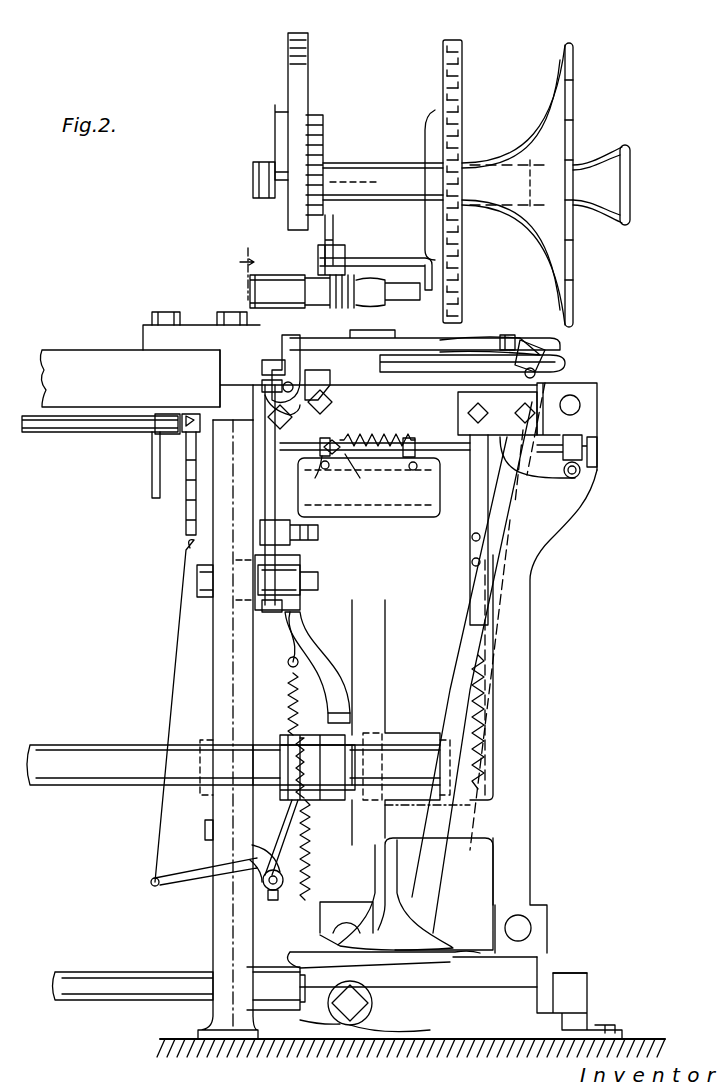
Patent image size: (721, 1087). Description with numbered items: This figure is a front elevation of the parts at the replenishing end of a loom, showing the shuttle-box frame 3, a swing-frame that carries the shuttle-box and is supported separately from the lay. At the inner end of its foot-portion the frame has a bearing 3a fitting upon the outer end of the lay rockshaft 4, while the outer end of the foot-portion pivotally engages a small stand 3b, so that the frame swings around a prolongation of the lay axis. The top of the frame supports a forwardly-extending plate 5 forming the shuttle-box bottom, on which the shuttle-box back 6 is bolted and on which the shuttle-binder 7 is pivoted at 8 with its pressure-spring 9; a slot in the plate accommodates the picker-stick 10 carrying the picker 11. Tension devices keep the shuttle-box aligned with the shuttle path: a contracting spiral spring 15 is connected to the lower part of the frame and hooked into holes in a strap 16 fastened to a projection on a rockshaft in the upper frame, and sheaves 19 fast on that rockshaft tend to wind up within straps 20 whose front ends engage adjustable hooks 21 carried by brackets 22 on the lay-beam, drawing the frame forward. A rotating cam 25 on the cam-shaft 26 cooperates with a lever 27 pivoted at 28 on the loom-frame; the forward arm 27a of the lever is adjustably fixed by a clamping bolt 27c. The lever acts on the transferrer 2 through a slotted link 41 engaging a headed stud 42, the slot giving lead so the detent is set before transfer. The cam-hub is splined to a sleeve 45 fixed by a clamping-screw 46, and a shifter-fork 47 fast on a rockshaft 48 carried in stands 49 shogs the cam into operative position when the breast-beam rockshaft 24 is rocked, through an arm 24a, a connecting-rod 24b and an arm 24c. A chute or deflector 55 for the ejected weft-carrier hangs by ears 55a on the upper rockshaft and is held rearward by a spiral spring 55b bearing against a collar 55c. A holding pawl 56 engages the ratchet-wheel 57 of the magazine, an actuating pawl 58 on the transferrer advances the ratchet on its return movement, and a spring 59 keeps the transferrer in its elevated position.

The transferrer 2 is at (335, 262).
The shuttle-box frame 3 is at (530, 680).
The bearing 3a is at (272, 1010).
The small stand 3b is at (587, 950).
The lay rockshaft 4 is at (103, 1018).
The forwardly-extending plate 5 is at (405, 372).
The shuttle-box back 6 is at (482, 345).
The shuttle-binder 7 is at (418, 340).
The pivot 8 is at (512, 345).
The pressure-spring 9 is at (432, 364).
The picker-stick 10 is at (455, 688).
The picker 11 is at (545, 358).
The contracting spiral spring 15 is at (292, 698).
The strap 16 is at (480, 500).
The sheaves 19 is at (582, 445).
The strap 20 is at (575, 478).
The hooks 21 is at (580, 470).
The brackets 22 is at (548, 478).
The breast-beam rockshaft 24 is at (100, 432).
The arm 24a is at (183, 520).
The link or connecting-rod 24b is at (175, 648).
The arm 24c is at (180, 878).
The rotating cam 25 is at (330, 750).
The cam-shaft 26 is at (98, 745).
The lever 27 is at (315, 658).
The forward arm 27a is at (282, 470).
The clamping bolt 27c is at (318, 532).
The pivot 28 is at (318, 580).
The link 41 is at (300, 385).
The headed stud 42 is at (305, 405).
The sleeve 45 is at (312, 850).
The clamping-screw 46 is at (372, 815).
The shifter-fork 47 is at (283, 825).
The rockshaft 48 is at (285, 893).
The stands or brackets 49 is at (258, 863).
The chute or deflector 55 is at (415, 520).
The ears 55a is at (410, 440).
The spiral spring 55b is at (360, 445).
The collar 55c is at (367, 477).
The detent or holding pawl 56 is at (323, 188).
The ratchet-wheel 57 is at (323, 128).
The actuating pawl 58 is at (333, 240).
The spring 59 is at (360, 270).